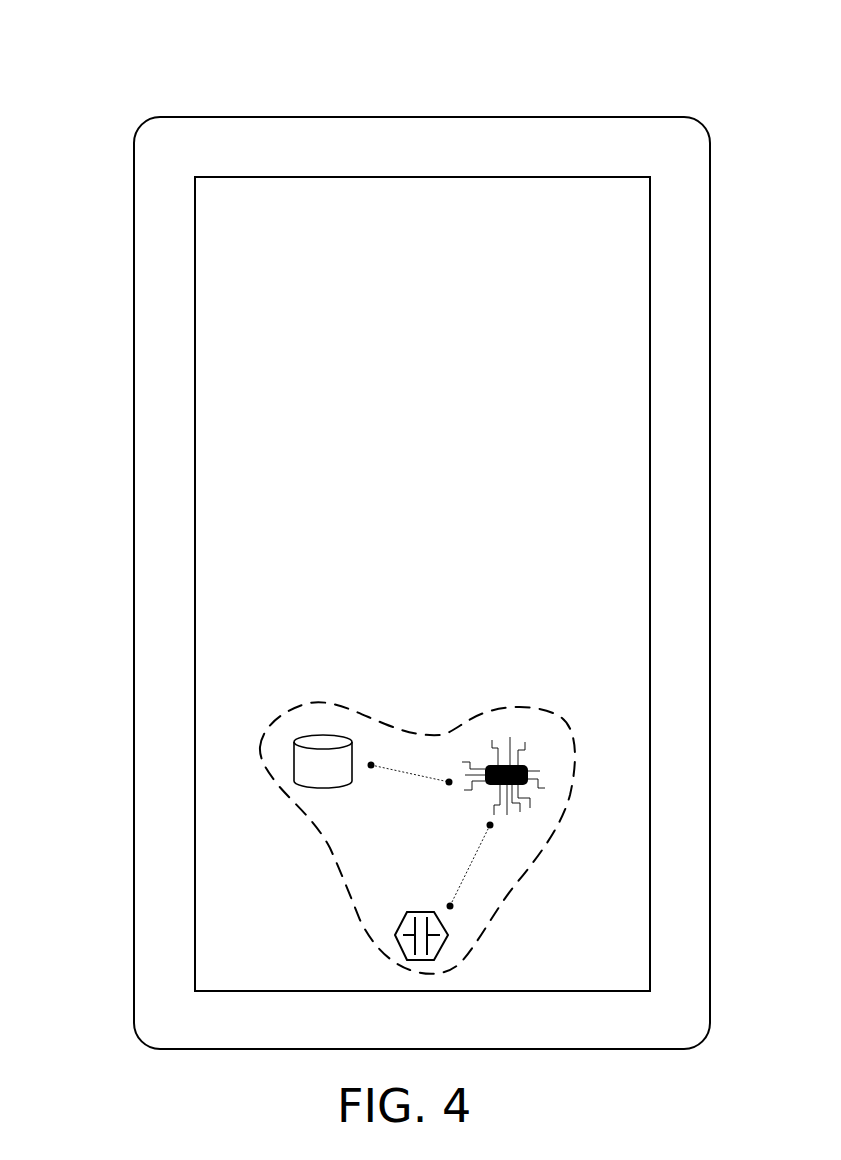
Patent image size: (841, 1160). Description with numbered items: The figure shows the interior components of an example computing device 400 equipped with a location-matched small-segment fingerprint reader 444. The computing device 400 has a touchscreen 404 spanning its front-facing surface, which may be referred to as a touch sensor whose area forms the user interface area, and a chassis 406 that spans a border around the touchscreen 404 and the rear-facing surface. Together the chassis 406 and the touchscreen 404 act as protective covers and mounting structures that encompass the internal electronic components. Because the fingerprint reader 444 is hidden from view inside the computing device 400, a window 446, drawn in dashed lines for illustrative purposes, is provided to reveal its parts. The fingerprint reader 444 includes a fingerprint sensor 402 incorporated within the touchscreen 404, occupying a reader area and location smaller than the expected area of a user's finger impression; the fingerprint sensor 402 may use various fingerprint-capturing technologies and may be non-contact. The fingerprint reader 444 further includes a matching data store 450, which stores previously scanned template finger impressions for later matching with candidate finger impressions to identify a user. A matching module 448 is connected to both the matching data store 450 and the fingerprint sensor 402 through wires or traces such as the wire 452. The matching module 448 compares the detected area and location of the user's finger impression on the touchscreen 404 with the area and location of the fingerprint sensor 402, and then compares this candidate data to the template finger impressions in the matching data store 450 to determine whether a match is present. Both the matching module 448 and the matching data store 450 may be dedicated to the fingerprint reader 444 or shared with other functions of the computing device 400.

The computing device 400 is at (130, 82).
The fingerprint sensor 402 is at (437, 950).
The touchscreen 404 is at (437, 503).
The chassis 406 is at (571, 160).
The fingerprint reader 444 is at (382, 838).
The window 446 is at (440, 735).
The matching module 448 is at (530, 765).
The matching data store 450 is at (305, 735).
The wire 452 is at (422, 770).